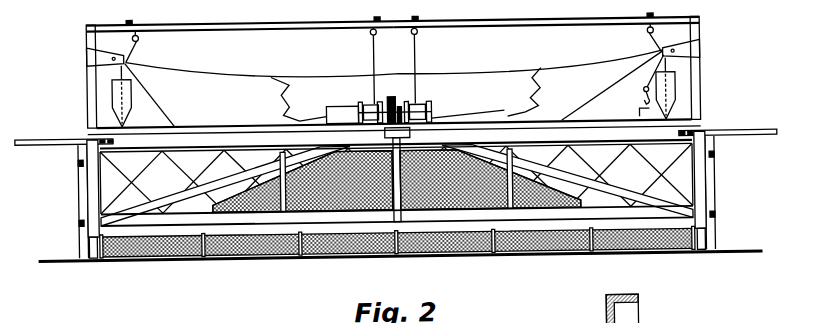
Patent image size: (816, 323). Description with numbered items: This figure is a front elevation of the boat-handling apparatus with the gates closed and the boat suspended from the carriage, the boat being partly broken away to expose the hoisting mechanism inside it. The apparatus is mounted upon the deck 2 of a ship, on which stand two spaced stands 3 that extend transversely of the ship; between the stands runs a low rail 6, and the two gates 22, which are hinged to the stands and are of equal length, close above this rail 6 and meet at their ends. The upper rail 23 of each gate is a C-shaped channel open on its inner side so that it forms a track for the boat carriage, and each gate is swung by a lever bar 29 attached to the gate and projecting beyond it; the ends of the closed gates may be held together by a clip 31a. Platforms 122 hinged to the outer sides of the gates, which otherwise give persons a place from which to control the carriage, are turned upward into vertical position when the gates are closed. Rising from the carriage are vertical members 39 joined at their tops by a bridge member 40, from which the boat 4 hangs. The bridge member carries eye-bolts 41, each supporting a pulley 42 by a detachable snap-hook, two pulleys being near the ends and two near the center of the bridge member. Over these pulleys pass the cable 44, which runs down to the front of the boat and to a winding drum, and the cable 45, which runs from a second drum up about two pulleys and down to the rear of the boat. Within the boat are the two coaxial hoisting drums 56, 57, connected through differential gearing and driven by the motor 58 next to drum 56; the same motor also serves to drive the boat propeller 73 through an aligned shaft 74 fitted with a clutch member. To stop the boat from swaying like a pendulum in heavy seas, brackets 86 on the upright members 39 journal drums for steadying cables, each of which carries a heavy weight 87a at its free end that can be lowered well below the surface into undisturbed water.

The deck 2 is at (744, 256).
The stand 3 is at (82, 192).
The boat 4 is at (394, 89).
The low rail 6 is at (247, 247).
The gate 22 is at (192, 171).
The upper rail 23 is at (310, 146).
The lever bar 29 is at (60, 141).
The clip 31a is at (411, 138).
The vertical member 39 is at (89, 108).
The bridge member 40 is at (453, 27).
The eye-bolt 41 is at (134, 22).
The pulley 42 is at (419, 38).
The cable 44 is at (160, 36).
The cable 45 is at (527, 36).
The hoisting drum 56 is at (371, 106).
The hoisting drum 57 is at (418, 107).
The hoisting motor 58 is at (335, 120).
The boat propeller 73 is at (646, 104).
The shaft 74 is at (507, 119).
The bracket 86 is at (88, 57).
The weight 87a is at (132, 90).
The platform 122 is at (197, 219).